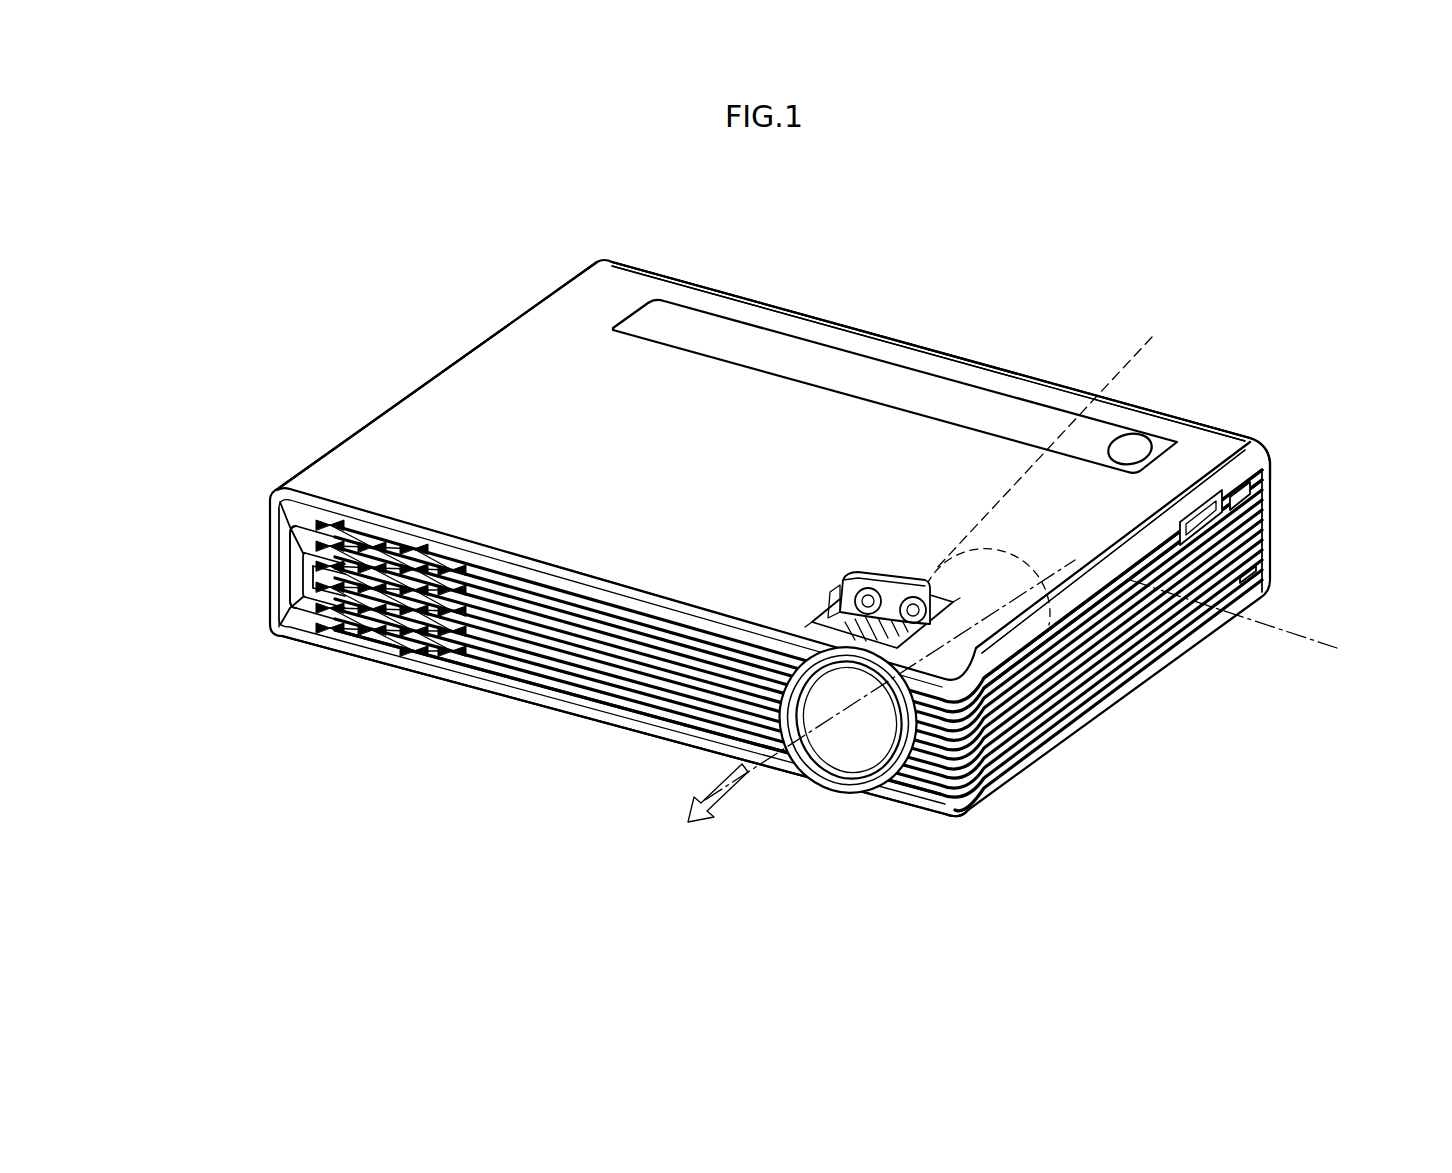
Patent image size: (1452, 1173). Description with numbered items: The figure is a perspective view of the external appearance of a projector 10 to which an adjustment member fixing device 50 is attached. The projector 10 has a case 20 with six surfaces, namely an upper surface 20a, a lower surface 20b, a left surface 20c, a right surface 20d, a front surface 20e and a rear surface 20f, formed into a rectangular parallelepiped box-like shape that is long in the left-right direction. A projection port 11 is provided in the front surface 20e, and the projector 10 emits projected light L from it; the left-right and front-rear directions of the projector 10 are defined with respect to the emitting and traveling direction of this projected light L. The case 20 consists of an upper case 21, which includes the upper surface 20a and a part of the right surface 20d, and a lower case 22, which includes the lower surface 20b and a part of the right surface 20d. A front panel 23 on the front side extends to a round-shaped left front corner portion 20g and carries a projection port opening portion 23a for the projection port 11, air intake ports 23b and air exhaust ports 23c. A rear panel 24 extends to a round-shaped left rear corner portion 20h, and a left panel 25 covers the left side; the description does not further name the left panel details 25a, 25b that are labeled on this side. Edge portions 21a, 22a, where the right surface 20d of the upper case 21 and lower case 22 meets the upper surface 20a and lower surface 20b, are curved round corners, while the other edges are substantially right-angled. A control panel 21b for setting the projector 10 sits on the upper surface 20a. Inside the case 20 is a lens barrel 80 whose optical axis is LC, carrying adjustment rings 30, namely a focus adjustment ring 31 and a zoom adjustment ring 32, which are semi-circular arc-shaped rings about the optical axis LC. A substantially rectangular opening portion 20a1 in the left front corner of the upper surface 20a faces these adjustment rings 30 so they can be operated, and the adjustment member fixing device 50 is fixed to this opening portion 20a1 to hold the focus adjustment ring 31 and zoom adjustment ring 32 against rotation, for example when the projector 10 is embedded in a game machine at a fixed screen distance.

The projector 10 is at (377, 249).
The projection port 11 is at (855, 742).
The case 20 is at (586, 332).
The upper surface 20a is at (552, 354).
The opening portion 20a1 is at (900, 645).
The lower surface 20b is at (519, 727).
The left surface 20c is at (1089, 667).
The right surface 20d is at (391, 383).
The front surface 20e is at (520, 628).
The rear surface 20f is at (770, 279).
The left front corner portion 20g is at (945, 846).
The left rear corner portion 20h is at (1299, 426).
The upper case 21 is at (410, 462).
The edge portion 21a is at (330, 465).
The control panel 21b is at (827, 370).
The lower case 22 is at (316, 642).
The edge portion 22a is at (249, 627).
The front panel 23 is at (618, 657).
The projection port opening portion 23a is at (805, 742).
The air intake ports 23b is at (644, 737).
The air exhaust ports 23c is at (364, 653).
The rear panel 24 is at (1058, 361).
The left panel 25 is at (1142, 612).
The side panel slits 25a is at (1150, 694).
The connector 25b is at (1255, 500).
The adjustment rings 30 is at (839, 397).
The focus adjustment ring 31 is at (840, 592).
The zoom adjustment ring 32 is at (918, 598).
The adjustment member fixing device 50 is at (920, 658).
The lens barrel 80 is at (1049, 463).
The projected light L is at (872, 709).
The optical axis LC is at (1251, 629).